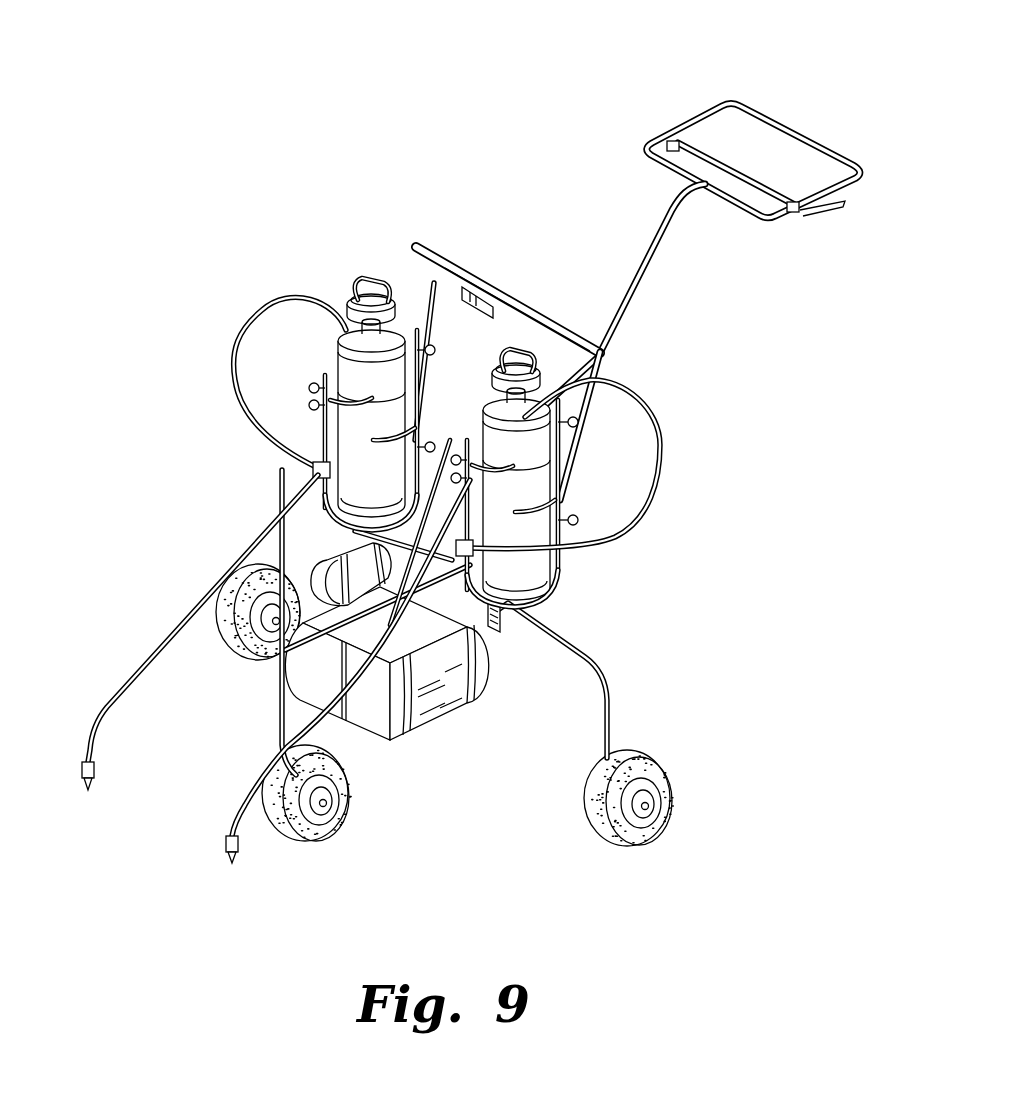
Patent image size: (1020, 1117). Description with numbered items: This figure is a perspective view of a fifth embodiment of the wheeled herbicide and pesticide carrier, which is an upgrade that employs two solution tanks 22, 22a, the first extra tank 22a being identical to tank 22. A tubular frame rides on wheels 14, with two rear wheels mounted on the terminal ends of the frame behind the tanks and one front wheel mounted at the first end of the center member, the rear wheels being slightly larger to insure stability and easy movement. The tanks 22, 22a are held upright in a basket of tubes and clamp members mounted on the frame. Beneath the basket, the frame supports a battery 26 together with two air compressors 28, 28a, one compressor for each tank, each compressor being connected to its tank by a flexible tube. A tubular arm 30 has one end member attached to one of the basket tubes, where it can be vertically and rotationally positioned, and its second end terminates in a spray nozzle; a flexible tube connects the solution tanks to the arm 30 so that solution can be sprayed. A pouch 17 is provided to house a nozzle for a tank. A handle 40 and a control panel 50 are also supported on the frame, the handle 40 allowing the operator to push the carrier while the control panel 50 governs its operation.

The wheels 14 is at (240, 653).
The pouch 17 is at (498, 624).
The first solution tank 22 is at (340, 349).
The first extra tank 22a is at (540, 473).
The battery 26 is at (310, 552).
The air compressor 28 is at (276, 668).
The second air compressor 28a is at (446, 714).
The tubular arm 30 is at (160, 645).
The handle 40 is at (676, 90).
The control panel 50 is at (527, 272).